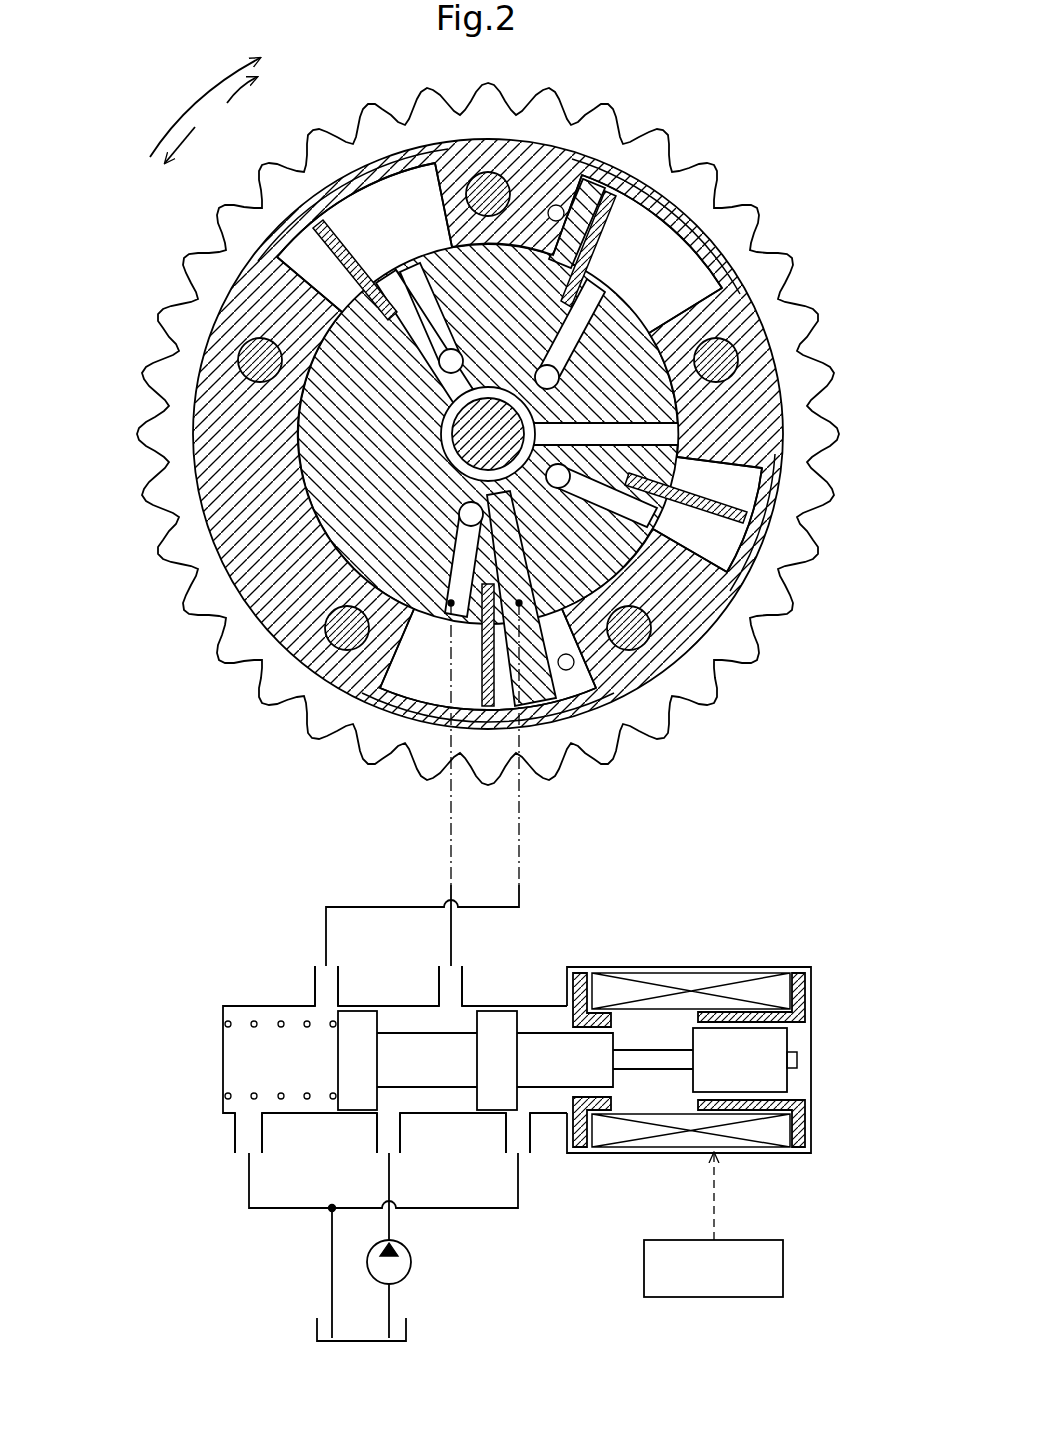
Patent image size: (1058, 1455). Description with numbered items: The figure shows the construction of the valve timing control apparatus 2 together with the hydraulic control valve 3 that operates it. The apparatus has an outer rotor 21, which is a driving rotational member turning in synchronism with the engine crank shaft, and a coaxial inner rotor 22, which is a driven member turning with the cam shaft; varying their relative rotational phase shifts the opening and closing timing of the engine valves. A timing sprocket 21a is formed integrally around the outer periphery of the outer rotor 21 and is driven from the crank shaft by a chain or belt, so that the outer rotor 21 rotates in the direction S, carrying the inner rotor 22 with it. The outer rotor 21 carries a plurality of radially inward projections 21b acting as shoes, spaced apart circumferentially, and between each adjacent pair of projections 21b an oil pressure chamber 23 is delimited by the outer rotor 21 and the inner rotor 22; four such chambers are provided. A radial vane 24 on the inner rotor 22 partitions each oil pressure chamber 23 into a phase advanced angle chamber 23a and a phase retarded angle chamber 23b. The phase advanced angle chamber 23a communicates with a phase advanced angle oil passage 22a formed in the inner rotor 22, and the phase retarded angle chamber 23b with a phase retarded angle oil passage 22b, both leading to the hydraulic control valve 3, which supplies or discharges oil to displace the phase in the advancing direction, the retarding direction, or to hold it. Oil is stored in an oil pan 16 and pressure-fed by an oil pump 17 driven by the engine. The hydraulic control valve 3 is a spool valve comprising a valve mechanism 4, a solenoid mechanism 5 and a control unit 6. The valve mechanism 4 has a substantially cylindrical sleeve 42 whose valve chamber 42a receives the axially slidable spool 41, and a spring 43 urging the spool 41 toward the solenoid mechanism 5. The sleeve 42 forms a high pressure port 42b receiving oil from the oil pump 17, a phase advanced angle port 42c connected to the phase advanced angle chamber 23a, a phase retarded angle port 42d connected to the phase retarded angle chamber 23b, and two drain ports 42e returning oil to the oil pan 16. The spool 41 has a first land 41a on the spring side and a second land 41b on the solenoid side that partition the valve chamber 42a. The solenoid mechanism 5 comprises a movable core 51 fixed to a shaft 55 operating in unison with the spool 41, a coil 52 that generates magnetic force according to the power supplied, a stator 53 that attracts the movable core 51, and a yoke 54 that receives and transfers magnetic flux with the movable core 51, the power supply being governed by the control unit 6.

The valve timing control apparatus 2 is at (482, 468).
The hydraulic control valve 3 is at (510, 1096).
The valve mechanism 4 is at (378, 1084).
The solenoid mechanism 5 is at (713, 1034).
The control unit 6 is at (785, 1268).
The oil pan 16 is at (317, 1333).
The oil pump 17 is at (412, 1262).
The outer rotor 21 is at (482, 418).
The timing sprocket 21a is at (261, 656).
The projections 21b is at (522, 175).
The inner rotor 22 is at (409, 442).
The phase advanced angle oil passage 22a is at (530, 280).
The phase retarded angle oil passage 22b is at (407, 273).
The oil pressure chamber 23 is at (512, 431).
The phase advanced angle chamber 23a is at (297, 260).
The phase retarded angle chamber 23b is at (437, 160).
The vane 24 is at (305, 225).
The spool 41 is at (429, 1098).
The first land 41a is at (352, 1105).
The second land 41b is at (493, 1090).
The sleeve 42 is at (222, 1053).
The valve chamber 42a is at (419, 1018).
The high pressure port 42b is at (393, 1127).
The phase advanced angle port 42c is at (315, 992).
The phase retarded angle port 42d is at (455, 990).
The drain port 42e is at (245, 1128).
The spring 43 is at (222, 1100).
The movable core 51 is at (800, 1075).
The coil 52 is at (680, 975).
The stator 53 is at (580, 975).
The yoke 54 is at (808, 1003).
The shaft 55 is at (655, 1068).